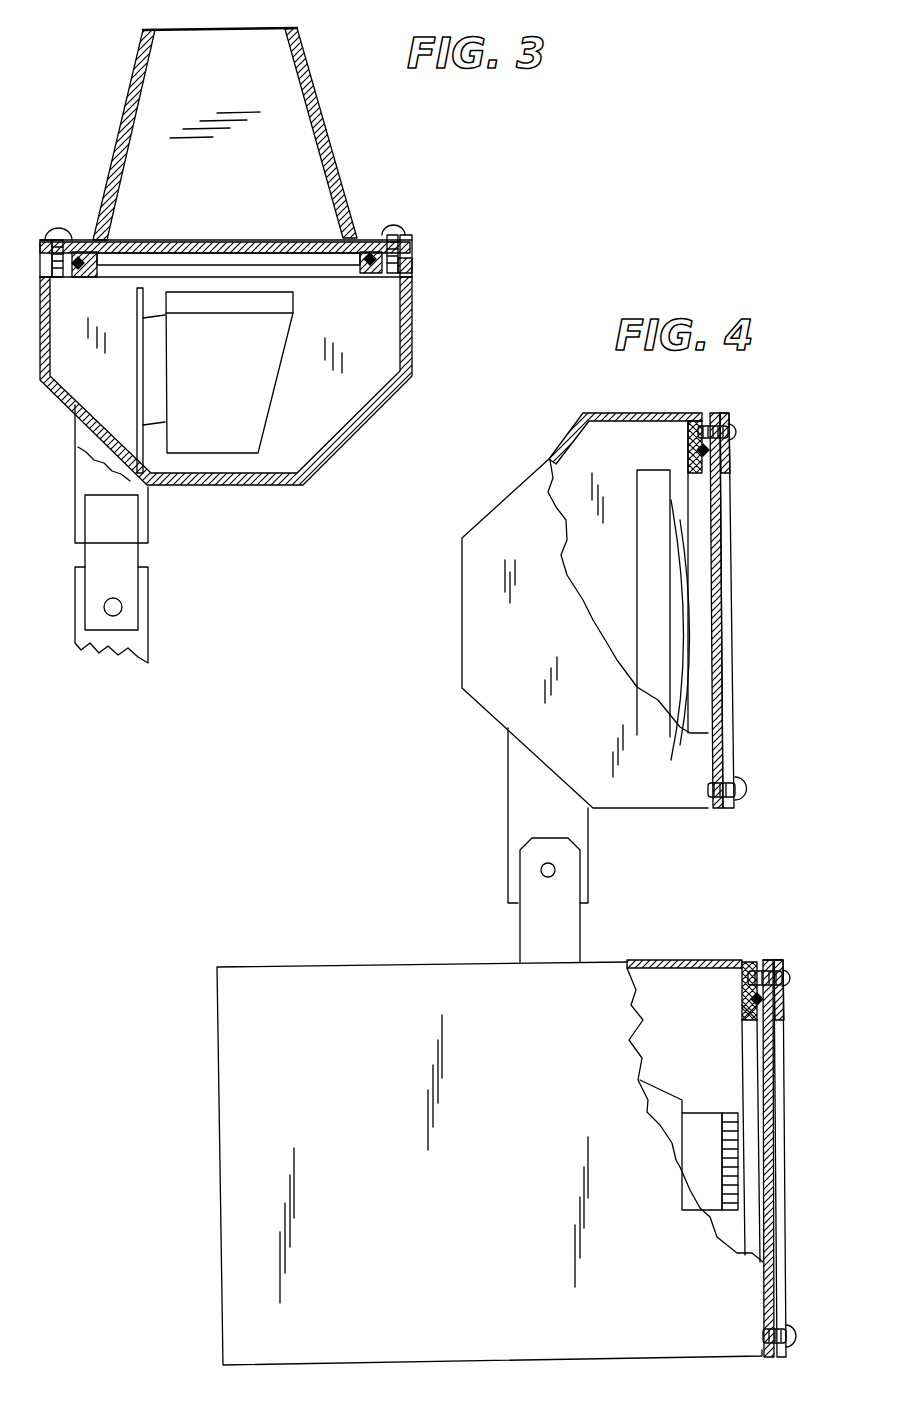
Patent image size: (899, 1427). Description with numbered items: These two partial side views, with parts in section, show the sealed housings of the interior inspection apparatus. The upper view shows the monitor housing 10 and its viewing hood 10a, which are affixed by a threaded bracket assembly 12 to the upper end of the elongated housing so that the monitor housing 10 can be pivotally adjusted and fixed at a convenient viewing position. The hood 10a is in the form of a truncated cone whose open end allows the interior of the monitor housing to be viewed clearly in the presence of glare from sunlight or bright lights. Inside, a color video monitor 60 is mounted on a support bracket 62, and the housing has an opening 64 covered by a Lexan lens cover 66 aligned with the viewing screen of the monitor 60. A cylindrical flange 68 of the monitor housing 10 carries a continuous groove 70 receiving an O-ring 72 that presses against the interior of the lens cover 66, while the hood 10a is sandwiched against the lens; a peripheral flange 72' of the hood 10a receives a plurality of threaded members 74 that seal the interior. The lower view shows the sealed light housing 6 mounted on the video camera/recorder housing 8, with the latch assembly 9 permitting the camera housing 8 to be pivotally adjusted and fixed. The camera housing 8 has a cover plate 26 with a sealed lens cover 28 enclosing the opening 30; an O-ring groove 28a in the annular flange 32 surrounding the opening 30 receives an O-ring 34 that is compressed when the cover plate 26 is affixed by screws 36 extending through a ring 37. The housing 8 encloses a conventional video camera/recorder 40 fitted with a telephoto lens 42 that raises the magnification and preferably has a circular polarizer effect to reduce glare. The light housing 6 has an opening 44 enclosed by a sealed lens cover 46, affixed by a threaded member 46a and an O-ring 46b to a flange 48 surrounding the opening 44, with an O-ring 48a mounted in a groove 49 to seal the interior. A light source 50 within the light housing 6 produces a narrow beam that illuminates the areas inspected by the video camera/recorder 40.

In FIG. 3, the viewing hood 10a is at (325, 127).
In FIG. 3, the lens cover 66 is at (240, 248).
In FIG. 3, the opening 64 is at (153, 270).
In FIG. 3, the threaded members 74 is at (58, 228).
In FIG. 3, the peripheral flange 72' is at (70, 232).
In FIG. 3, the O-ring 72 is at (349, 277).
In FIG. 3, the continuous groove 70 is at (371, 270).
In FIG. 3, the cylindrical flange 68 is at (408, 290).
In FIG. 3, the monitor housing 10 is at (362, 388).
In FIG. 3, the color video monitor 60 is at (263, 393).
In FIG. 3, the support bracket 62 is at (133, 388).
In FIG. 3, the threaded bracket assembly 12 is at (95, 555).
In FIG. 4, the light housing 6 is at (637, 414).
In FIG. 4, the flange 48 is at (695, 432).
In FIG. 4, the O-ring 48a is at (700, 448).
In FIG. 4, the threaded member 46a is at (762, 418).
In FIG. 4, the opening 44 is at (703, 560).
In FIG. 4, the lens cover 46 is at (722, 625).
In FIG. 4, the O-ring 46b is at (730, 460).
In FIG. 4, the groove 49 is at (687, 470).
In FIG. 4, the light source 50 is at (650, 642).
In FIG. 4, the latch assembly 9 is at (560, 890).
In FIG. 4, the video camera/recorder housing 8 is at (677, 957).
In FIG. 4, the cover plate 26 is at (765, 950).
In FIG. 4, the ring 37 is at (775, 960).
In FIG. 4, the screws 36 is at (792, 982).
In FIG. 4, the O-ring groove 28a is at (752, 1000).
In FIG. 4, the O-ring 34 is at (747, 1008).
In FIG. 4, the annular flange 32 is at (743, 1013).
In FIG. 4, the opening 30 is at (750, 1063).
In FIG. 4, the video camera/recorder 40 is at (662, 1100).
In FIG. 4, the telephoto lens 42 is at (700, 1113).
In FIG. 4, the lens cover 28 is at (772, 1146).